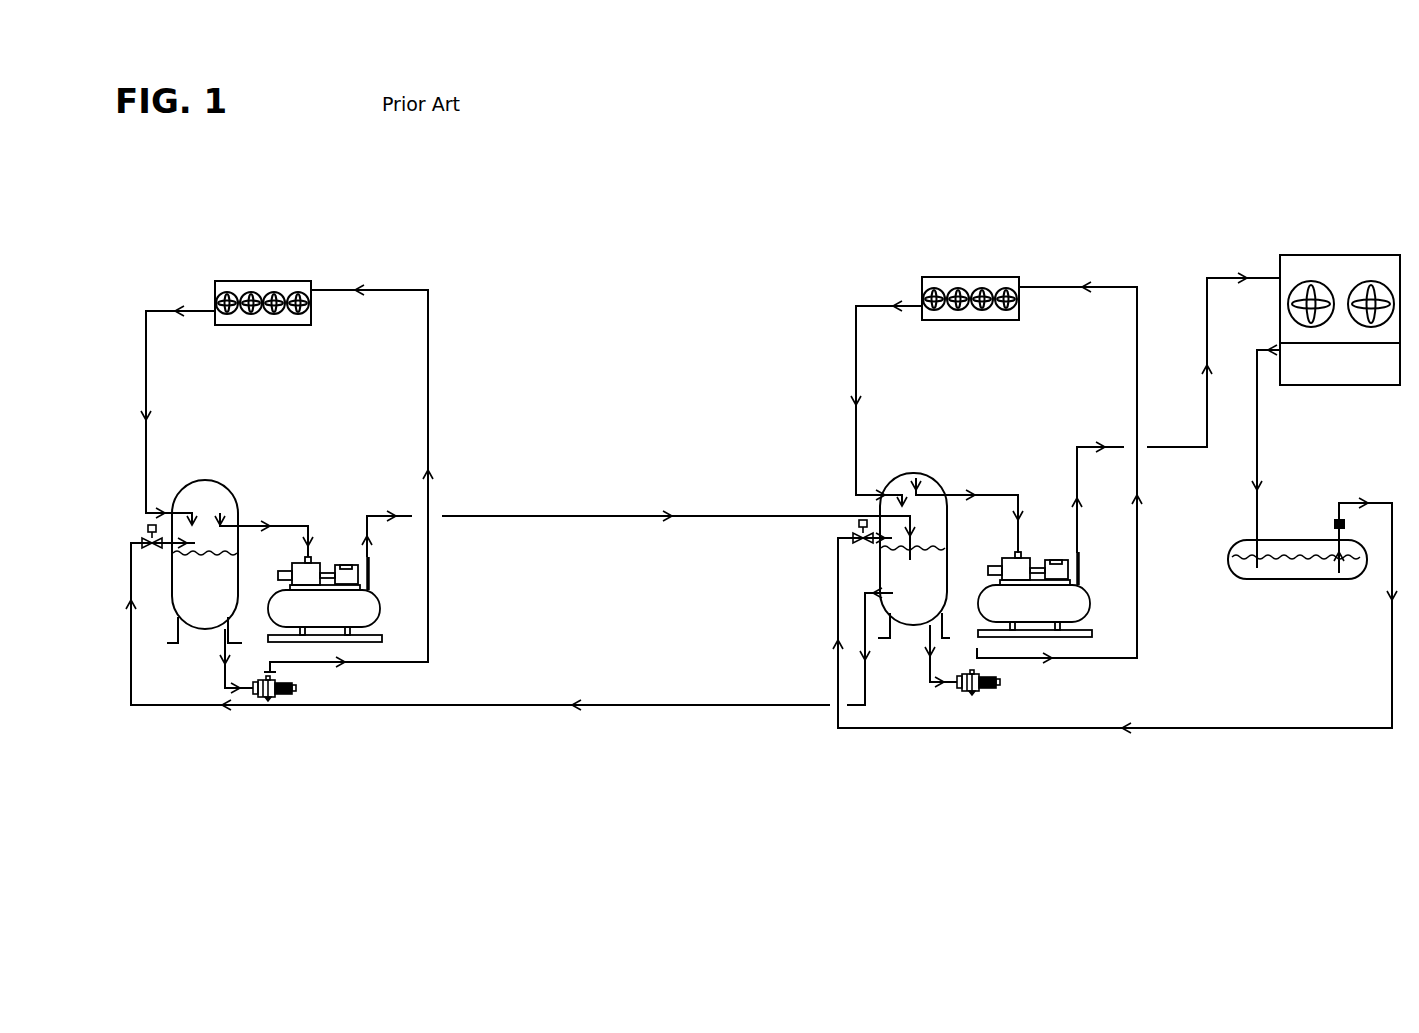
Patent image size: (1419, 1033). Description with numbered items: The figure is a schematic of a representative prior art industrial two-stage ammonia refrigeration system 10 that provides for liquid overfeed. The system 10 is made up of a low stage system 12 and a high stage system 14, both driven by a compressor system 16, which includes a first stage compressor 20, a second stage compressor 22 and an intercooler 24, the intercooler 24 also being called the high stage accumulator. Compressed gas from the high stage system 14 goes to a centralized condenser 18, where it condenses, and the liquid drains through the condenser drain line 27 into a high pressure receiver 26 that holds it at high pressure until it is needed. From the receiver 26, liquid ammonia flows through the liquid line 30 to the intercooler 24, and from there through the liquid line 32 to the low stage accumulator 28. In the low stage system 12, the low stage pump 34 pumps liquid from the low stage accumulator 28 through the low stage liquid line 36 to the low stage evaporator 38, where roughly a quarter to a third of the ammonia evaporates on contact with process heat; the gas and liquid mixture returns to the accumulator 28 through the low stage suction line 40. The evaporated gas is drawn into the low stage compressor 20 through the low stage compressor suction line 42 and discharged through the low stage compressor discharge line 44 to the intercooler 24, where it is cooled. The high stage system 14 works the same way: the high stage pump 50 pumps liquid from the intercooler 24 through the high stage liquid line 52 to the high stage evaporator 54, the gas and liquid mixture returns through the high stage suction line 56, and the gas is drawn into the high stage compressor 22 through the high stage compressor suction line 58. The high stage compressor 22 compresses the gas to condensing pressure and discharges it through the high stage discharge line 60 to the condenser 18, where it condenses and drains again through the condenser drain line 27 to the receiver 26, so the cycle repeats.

The two-stage refrigeration system 10 is at (730, 227).
The low stage system 12 is at (460, 292).
The high stage system 14 is at (1055, 237).
The compressor system 16 is at (788, 639).
The condenser 18 is at (1365, 254).
The first stage compressor 20 is at (380, 602).
The second stage compressor 22 is at (1092, 602).
The intercooler 24 is at (910, 628).
The high pressure receiver 26 is at (1250, 580).
The condenser drain line 27 is at (1259, 445).
The low stage accumulator 28 is at (200, 631).
The liquid line 30 is at (1080, 729).
The liquid line 32 is at (735, 706).
The low stage pump 34 is at (296, 688).
The low stage liquid line 36 is at (430, 632).
The low stage evaporator 38 is at (311, 314).
The low stage suction line 40 is at (147, 406).
The low stage compressor suction line 42 is at (295, 524).
The low stage compressor discharge line 44 is at (477, 518).
The high stage pump 50 is at (1000, 686).
The high stage liquid line 52 is at (1140, 634).
The high stage evaporator 54 is at (991, 275).
The high stage suction line 56 is at (855, 365).
The high stage compressor suction line 58 is at (995, 500).
The high stage discharge line 60 is at (1208, 330).